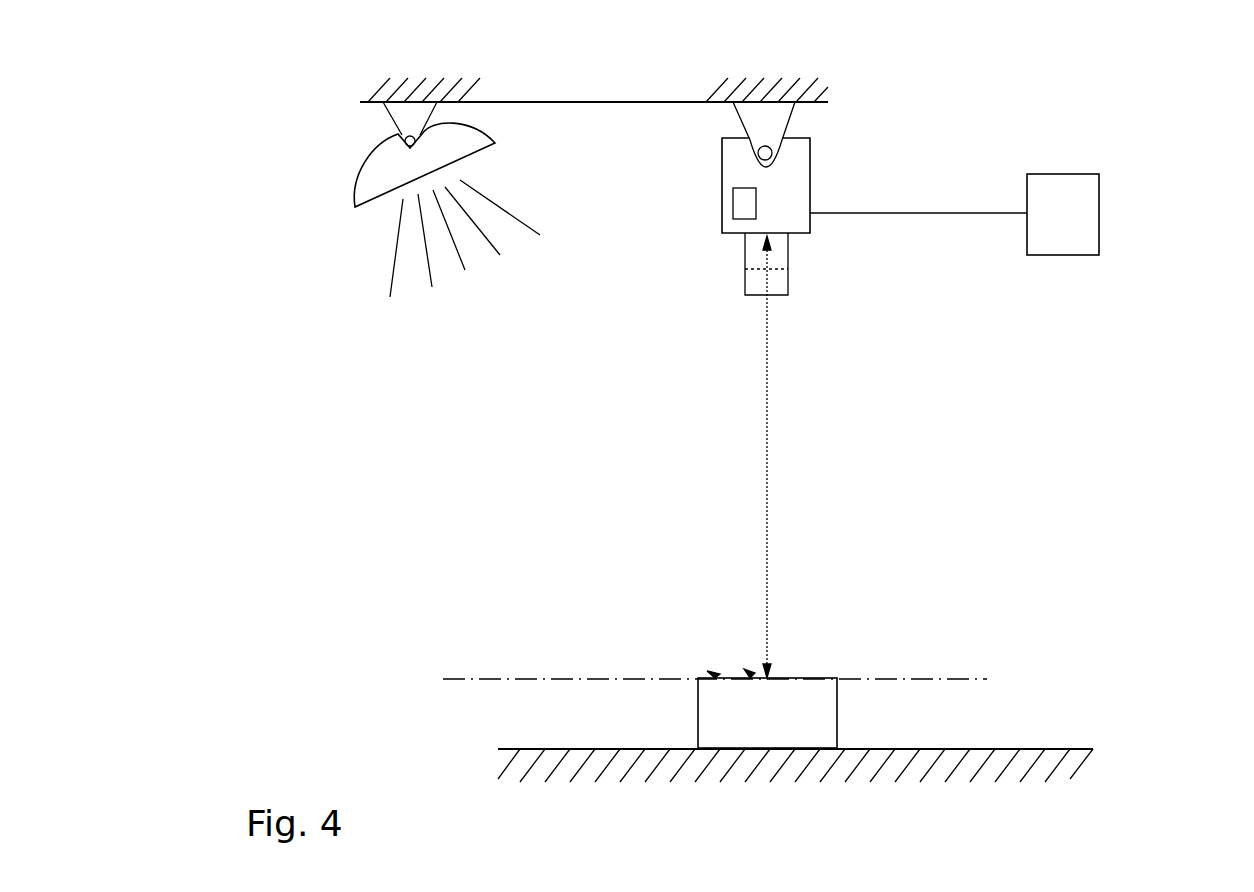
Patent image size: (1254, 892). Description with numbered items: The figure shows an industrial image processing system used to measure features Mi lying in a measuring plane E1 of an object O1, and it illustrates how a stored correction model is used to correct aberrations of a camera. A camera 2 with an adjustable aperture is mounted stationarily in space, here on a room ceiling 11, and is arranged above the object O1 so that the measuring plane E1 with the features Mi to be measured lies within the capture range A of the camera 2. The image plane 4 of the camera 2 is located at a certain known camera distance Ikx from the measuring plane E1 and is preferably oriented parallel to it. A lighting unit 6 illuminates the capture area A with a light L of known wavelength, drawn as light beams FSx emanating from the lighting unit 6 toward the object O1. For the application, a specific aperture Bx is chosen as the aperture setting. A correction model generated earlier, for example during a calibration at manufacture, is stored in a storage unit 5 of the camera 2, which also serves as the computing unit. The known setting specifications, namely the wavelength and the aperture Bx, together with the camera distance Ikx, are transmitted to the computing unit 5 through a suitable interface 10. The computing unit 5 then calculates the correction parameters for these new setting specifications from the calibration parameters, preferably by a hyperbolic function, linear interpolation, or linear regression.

The room ceiling 11 is at (830, 92).
The lighting unit 6 is at (386, 170).
The light L is at (375, 255).
The light beams FSx is at (430, 270).
The camera 2 is at (823, 165).
The storage unit / computing unit 5 is at (732, 205).
The image plane 4 is at (783, 235).
The aperture Bx is at (745, 295).
The interface 10 is at (1100, 223).
The camera distance Ikx is at (781, 457).
The capture range A is at (900, 572).
The features Mi is at (712, 673).
The measuring plane E1 is at (735, 683).
The object O1 is at (757, 715).